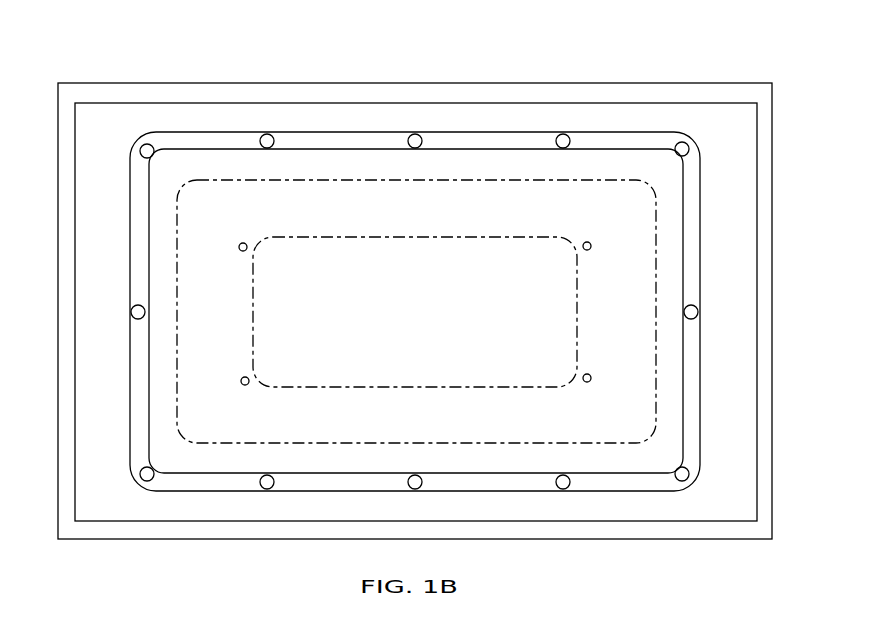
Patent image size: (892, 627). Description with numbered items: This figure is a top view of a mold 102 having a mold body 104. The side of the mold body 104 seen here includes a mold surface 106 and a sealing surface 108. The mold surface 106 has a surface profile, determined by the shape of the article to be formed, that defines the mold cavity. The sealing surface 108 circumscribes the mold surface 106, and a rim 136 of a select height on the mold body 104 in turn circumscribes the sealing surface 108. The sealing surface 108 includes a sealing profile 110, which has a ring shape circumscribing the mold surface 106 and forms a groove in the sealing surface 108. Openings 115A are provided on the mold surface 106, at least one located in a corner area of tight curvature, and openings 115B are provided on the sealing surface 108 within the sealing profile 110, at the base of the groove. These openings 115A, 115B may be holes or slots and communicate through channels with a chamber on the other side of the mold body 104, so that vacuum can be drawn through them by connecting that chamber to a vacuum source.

The mold 102 is at (419, 50).
The mold body 104 is at (632, 82).
The mold surface 106 is at (461, 202).
The sealing surface 108 is at (678, 117).
The sealing profile 110 is at (202, 137).
The openings 115A is at (244, 386).
The openings 115B is at (564, 134).
The rim 136 is at (107, 92).